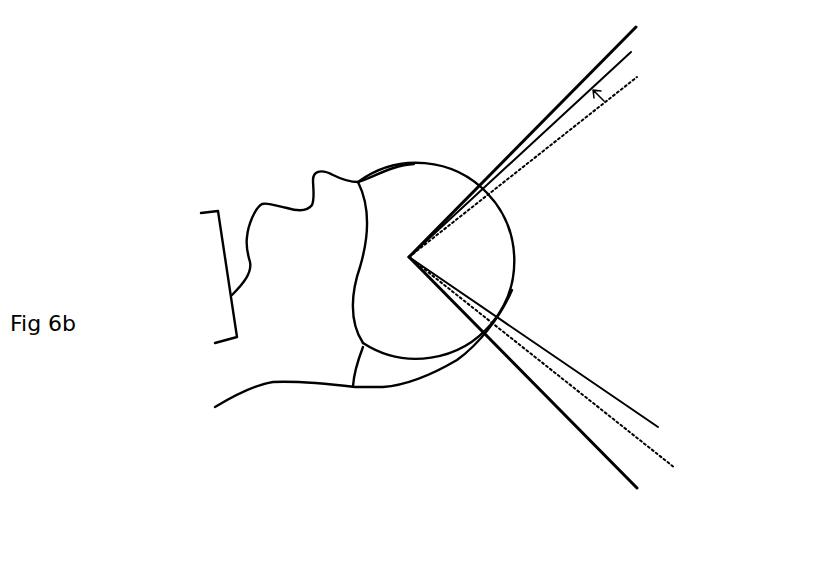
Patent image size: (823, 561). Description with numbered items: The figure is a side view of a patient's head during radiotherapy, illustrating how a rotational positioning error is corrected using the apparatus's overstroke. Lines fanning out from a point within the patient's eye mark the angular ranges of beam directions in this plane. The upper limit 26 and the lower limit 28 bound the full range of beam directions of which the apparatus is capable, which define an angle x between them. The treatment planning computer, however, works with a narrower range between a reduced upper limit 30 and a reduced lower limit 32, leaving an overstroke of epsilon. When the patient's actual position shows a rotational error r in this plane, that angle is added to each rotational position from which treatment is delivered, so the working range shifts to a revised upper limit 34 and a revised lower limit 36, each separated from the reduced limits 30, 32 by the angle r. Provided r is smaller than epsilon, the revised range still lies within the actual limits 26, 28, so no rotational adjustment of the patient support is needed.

The upper limit 26 is at (565, 98).
The lower limit 28 is at (613, 465).
The reduced upper limit 30 is at (590, 115).
The reduced lower limit 32 is at (667, 458).
The revised upper limit 34 is at (617, 70).
The revised lower limit 36 is at (627, 402).
The rotational error angle r is at (622, 91).